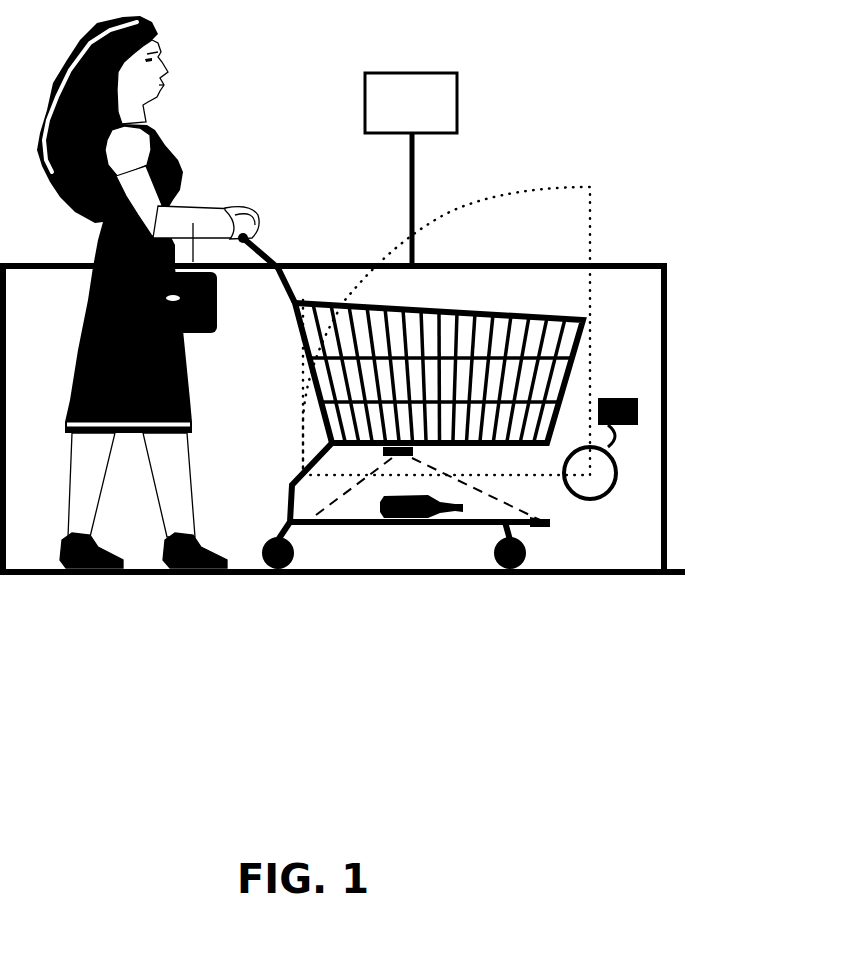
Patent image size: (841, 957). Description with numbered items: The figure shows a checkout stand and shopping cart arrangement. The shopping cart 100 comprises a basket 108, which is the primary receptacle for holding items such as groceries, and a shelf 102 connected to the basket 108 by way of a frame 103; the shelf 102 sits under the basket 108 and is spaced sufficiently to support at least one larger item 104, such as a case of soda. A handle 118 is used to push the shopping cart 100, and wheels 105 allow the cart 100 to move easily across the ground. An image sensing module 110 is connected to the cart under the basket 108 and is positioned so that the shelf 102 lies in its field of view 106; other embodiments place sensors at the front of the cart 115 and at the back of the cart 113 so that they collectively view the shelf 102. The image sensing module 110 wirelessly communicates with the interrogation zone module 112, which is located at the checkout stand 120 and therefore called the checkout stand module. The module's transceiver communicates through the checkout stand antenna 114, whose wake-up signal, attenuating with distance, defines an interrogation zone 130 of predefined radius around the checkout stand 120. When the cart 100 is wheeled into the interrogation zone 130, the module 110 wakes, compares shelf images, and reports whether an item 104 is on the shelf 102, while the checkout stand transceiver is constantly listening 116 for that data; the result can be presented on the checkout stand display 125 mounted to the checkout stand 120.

The shopping cart 100 is at (422, 392).
The shelf 102 is at (337, 527).
The frame 103 is at (288, 502).
The item 104 is at (392, 498).
The wheels 105 is at (515, 570).
The field of view 106 is at (340, 488).
The basket 108 is at (573, 365).
The image sensing module 110 is at (398, 445).
The interrogation zone module 112 is at (595, 413).
The back of the cart 113 is at (300, 387).
The checkout stand antenna 114 is at (618, 485).
The front of the cart 115 is at (585, 438).
The listening 116 is at (432, 456).
The handle 118 is at (267, 250).
The checkout stand 120 is at (613, 262).
The checkout stand display 125 is at (460, 115).
The interrogation zone 130 is at (542, 188).